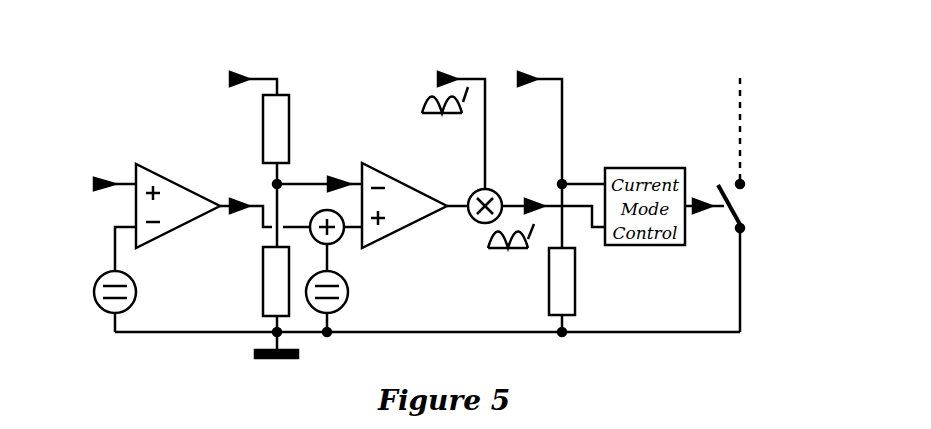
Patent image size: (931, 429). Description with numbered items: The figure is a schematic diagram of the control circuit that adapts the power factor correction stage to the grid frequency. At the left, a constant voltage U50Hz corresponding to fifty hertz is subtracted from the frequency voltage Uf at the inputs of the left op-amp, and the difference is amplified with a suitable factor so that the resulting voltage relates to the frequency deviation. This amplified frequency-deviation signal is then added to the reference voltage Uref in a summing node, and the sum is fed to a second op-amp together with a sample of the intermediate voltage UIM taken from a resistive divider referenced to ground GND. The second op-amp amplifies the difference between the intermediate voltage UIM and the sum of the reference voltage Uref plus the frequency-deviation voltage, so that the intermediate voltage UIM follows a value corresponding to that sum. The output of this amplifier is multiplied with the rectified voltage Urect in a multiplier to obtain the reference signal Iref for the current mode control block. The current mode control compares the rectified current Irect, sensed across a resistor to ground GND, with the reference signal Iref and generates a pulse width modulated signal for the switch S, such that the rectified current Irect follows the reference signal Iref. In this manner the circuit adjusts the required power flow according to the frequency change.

The frequency voltage Uf is at (115, 169).
The intermediate voltage UIM is at (259, 192).
The constant voltage corresponding to 50 Hz U50Hz is at (145, 272).
The ground GND is at (249, 348).
The reference voltage Uref is at (358, 272).
The rectified voltage Urect is at (453, 118).
The reference current signal Iref is at (546, 210).
The rectified current Irect is at (561, 192).
The switch S is at (724, 205).